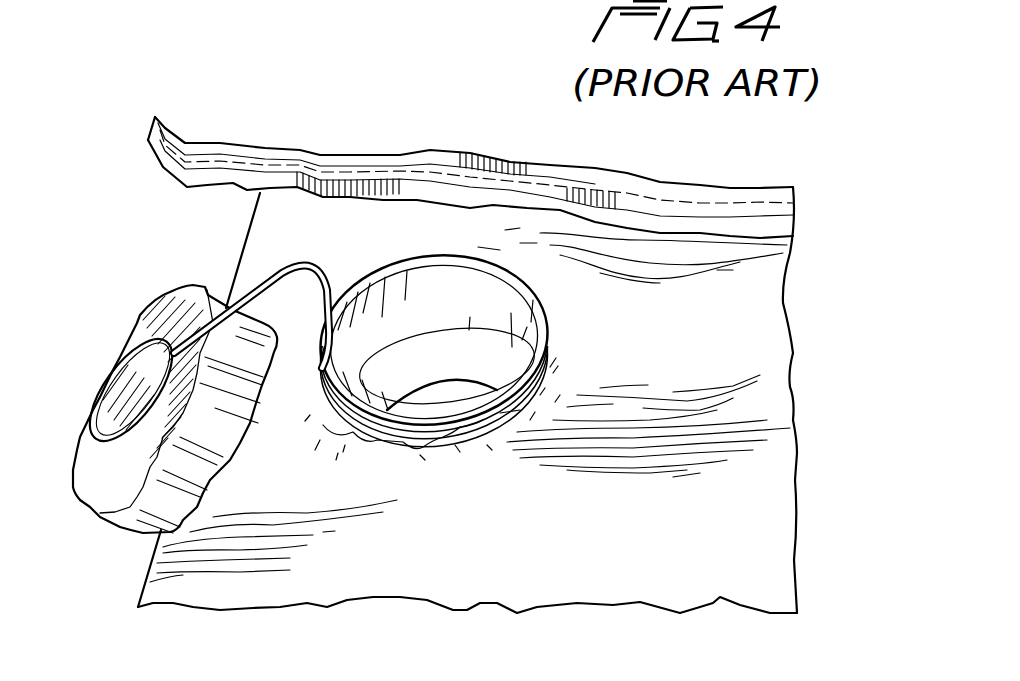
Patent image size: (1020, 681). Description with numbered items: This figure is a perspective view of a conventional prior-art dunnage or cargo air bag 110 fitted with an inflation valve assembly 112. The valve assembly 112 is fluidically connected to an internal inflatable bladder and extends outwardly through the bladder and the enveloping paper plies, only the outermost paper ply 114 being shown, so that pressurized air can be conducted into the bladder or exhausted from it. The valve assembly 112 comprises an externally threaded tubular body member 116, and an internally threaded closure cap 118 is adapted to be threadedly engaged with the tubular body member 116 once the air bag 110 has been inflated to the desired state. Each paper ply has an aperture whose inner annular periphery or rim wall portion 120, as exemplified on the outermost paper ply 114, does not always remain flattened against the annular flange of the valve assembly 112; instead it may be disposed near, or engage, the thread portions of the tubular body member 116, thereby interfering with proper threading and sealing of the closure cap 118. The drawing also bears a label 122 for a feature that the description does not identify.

The dunnage or cargo air bag 110 is at (416, 126).
The inflation valve assembly 112 is at (513, 277).
The outermost paper ply 114 is at (651, 557).
The externally threaded tubular body member 116 is at (403, 440).
The internally threaded closure cap 118 is at (93, 457).
The inner annular periphery or rim wall portion 120 is at (296, 262).
The threaded collar 122 is at (548, 364).